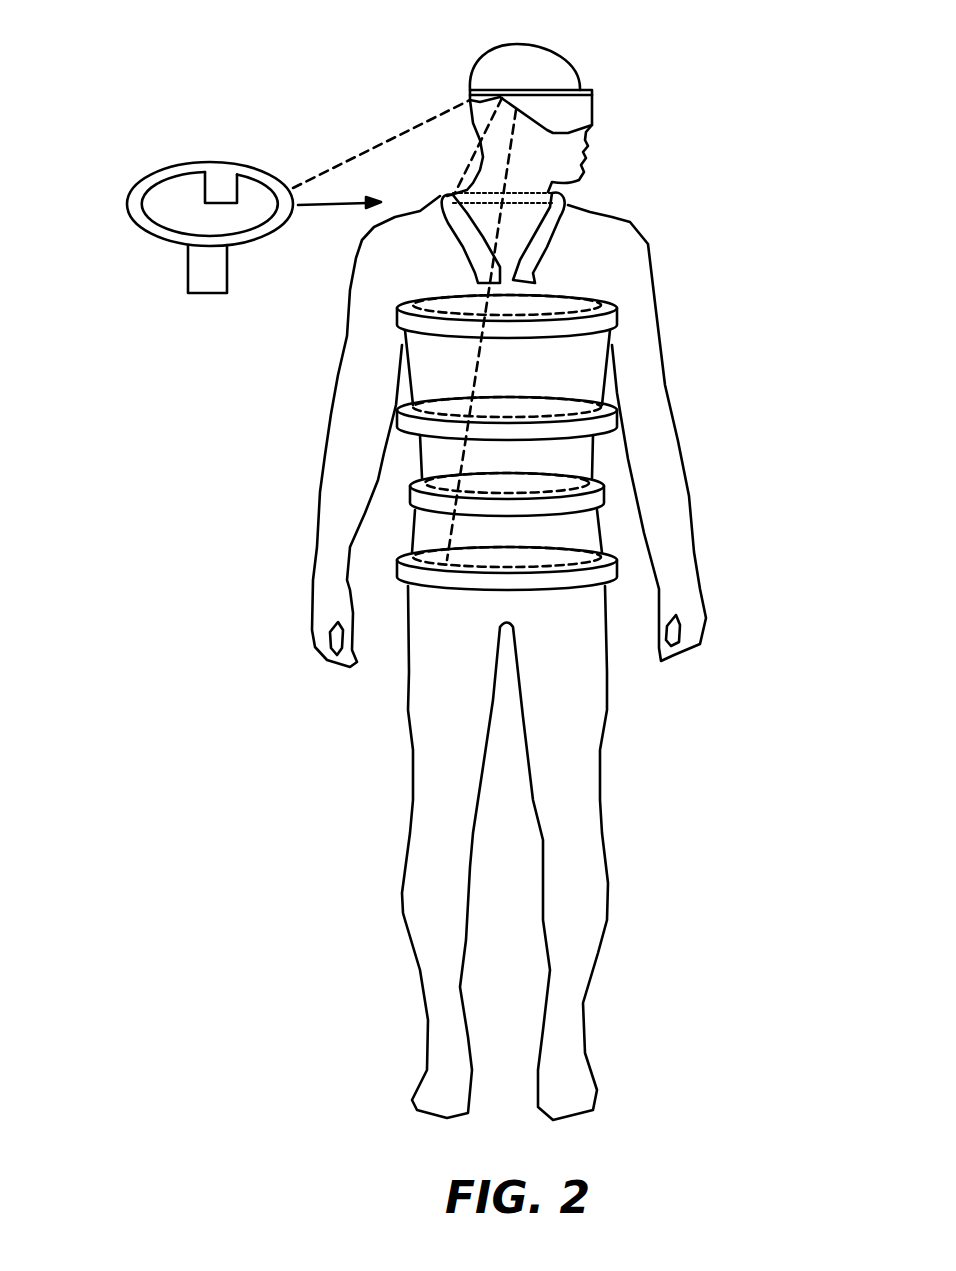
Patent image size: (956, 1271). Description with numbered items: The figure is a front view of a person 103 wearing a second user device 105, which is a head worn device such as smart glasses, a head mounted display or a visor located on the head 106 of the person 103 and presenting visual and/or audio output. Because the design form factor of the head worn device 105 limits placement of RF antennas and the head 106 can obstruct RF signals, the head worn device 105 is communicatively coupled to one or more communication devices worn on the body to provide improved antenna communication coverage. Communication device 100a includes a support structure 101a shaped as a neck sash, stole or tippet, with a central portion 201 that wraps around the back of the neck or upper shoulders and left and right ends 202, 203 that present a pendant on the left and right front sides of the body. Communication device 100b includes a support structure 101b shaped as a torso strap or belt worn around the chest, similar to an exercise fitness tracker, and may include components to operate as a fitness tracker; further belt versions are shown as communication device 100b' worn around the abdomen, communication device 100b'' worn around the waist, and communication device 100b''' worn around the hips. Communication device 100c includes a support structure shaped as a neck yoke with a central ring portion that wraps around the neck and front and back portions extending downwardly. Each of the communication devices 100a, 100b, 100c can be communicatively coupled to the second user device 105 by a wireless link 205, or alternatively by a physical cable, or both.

The communication device 100a is at (567, 198).
The communication device 100b is at (439, 313).
The communication device 100b' is at (435, 416).
The communication device 100b'' is at (413, 472).
The communication device 100b''' is at (414, 545).
The communication device 100c is at (127, 197).
The support structure 101a is at (250, 172).
The support structure 101b is at (615, 300).
The person 103 is at (644, 233).
The second user device 105 is at (592, 90).
The head 106 is at (472, 74).
The central portion 201 is at (487, 190).
The left end 202 is at (537, 287).
The right end 203 is at (480, 287).
The wireless link 205 is at (476, 371).